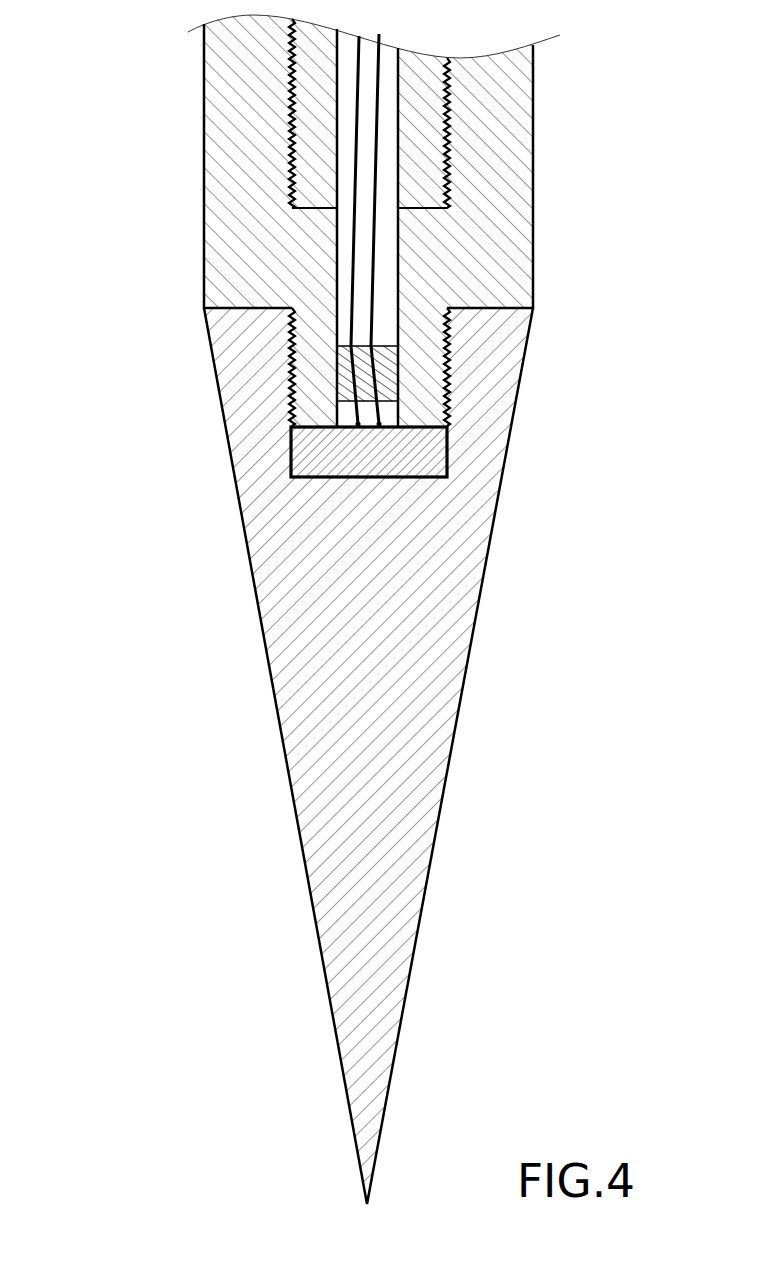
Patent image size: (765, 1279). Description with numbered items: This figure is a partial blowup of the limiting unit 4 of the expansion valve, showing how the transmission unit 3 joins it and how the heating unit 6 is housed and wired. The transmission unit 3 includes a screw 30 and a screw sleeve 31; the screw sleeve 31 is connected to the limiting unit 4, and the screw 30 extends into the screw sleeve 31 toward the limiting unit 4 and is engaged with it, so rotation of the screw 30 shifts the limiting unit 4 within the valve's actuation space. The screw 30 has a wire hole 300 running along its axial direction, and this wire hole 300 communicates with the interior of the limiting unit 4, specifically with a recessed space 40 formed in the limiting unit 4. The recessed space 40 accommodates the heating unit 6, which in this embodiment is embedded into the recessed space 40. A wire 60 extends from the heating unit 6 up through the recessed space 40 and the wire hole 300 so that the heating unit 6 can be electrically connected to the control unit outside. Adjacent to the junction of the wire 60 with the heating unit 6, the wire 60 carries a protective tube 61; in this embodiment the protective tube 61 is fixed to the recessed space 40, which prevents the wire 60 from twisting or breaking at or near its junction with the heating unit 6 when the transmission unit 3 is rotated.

The transmission unit 3 is at (295, 213).
The screw 30 is at (313, 90).
The screw sleeve 31 is at (250, 163).
The wire hole 300 is at (347, 251).
The limiting unit 4 is at (417, 624).
The recessed space 40 is at (347, 416).
The heating unit 6 is at (420, 453).
The wire 60 is at (375, 273).
The protective tube 61 is at (388, 372).